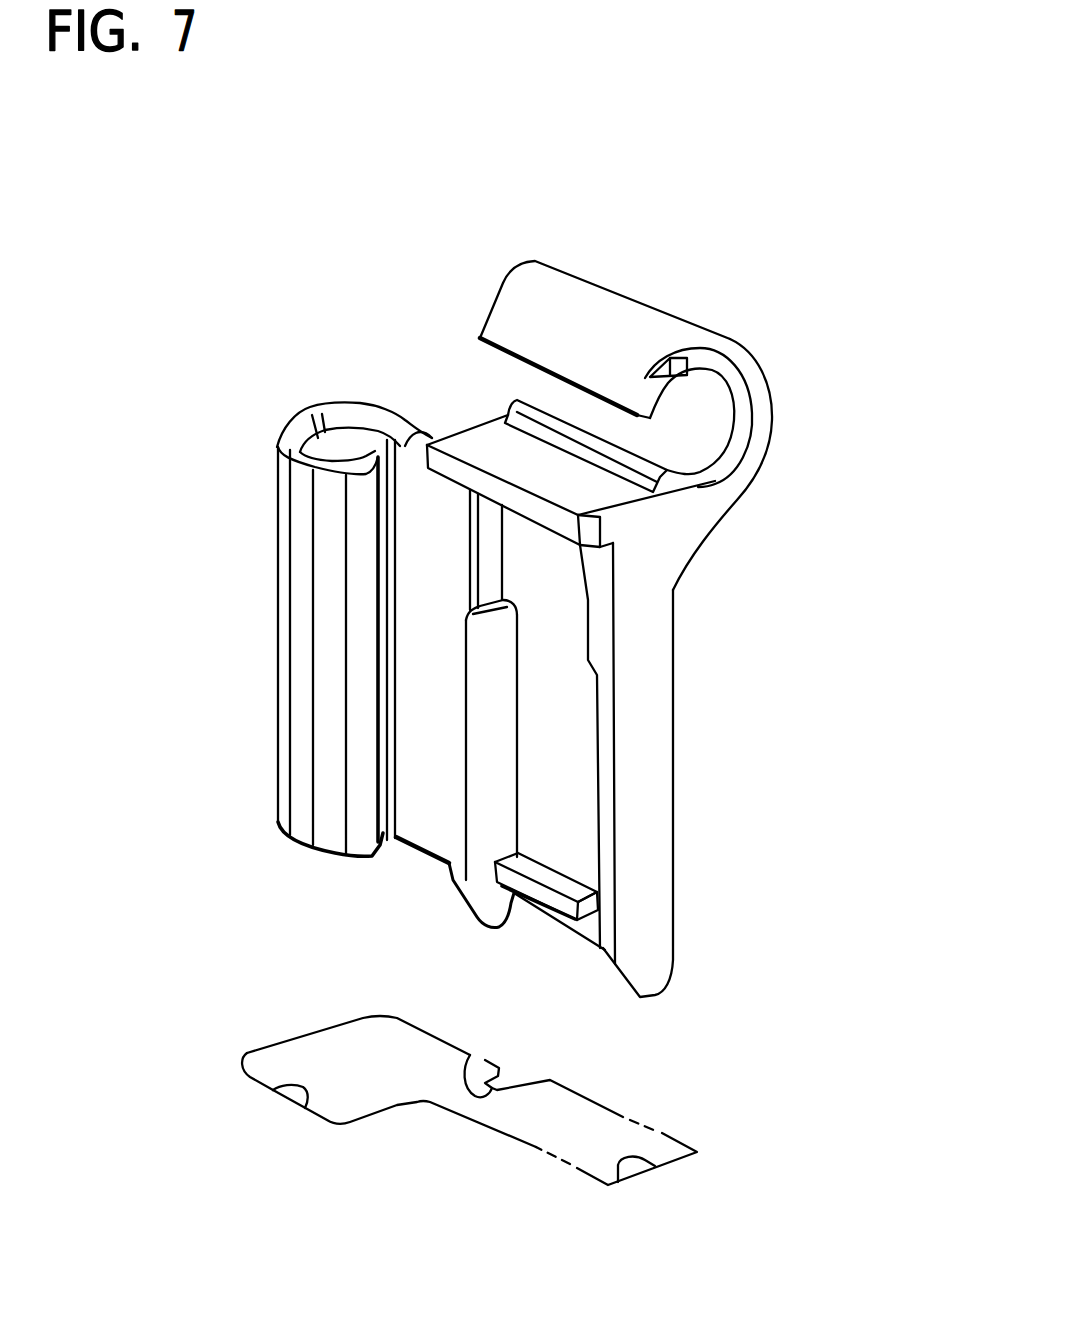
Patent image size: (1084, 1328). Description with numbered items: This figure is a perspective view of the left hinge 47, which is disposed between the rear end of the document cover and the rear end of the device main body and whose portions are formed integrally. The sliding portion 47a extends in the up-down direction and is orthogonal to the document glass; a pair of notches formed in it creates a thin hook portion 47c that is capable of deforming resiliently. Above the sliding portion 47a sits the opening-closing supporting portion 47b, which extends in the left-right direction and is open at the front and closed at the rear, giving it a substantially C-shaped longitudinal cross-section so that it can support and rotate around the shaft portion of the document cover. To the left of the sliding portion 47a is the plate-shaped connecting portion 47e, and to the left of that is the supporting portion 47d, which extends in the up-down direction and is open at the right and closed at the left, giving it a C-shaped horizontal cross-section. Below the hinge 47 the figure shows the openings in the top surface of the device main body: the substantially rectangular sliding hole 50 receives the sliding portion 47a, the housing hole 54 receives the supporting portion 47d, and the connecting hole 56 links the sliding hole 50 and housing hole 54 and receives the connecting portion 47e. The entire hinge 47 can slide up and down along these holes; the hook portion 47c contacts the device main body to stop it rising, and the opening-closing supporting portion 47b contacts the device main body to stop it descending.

The hinge 47 is at (547, 668).
The sliding portion 47a is at (648, 807).
The opening-closing supporting portion 47b is at (635, 330).
The hook portion 47c is at (537, 890).
The supporting portion 47d is at (325, 601).
The connecting portion 47e is at (425, 815).
The sliding hole 50 is at (484, 1128).
The housing hole 54 is at (308, 1094).
The connecting hole 56 is at (472, 1055).